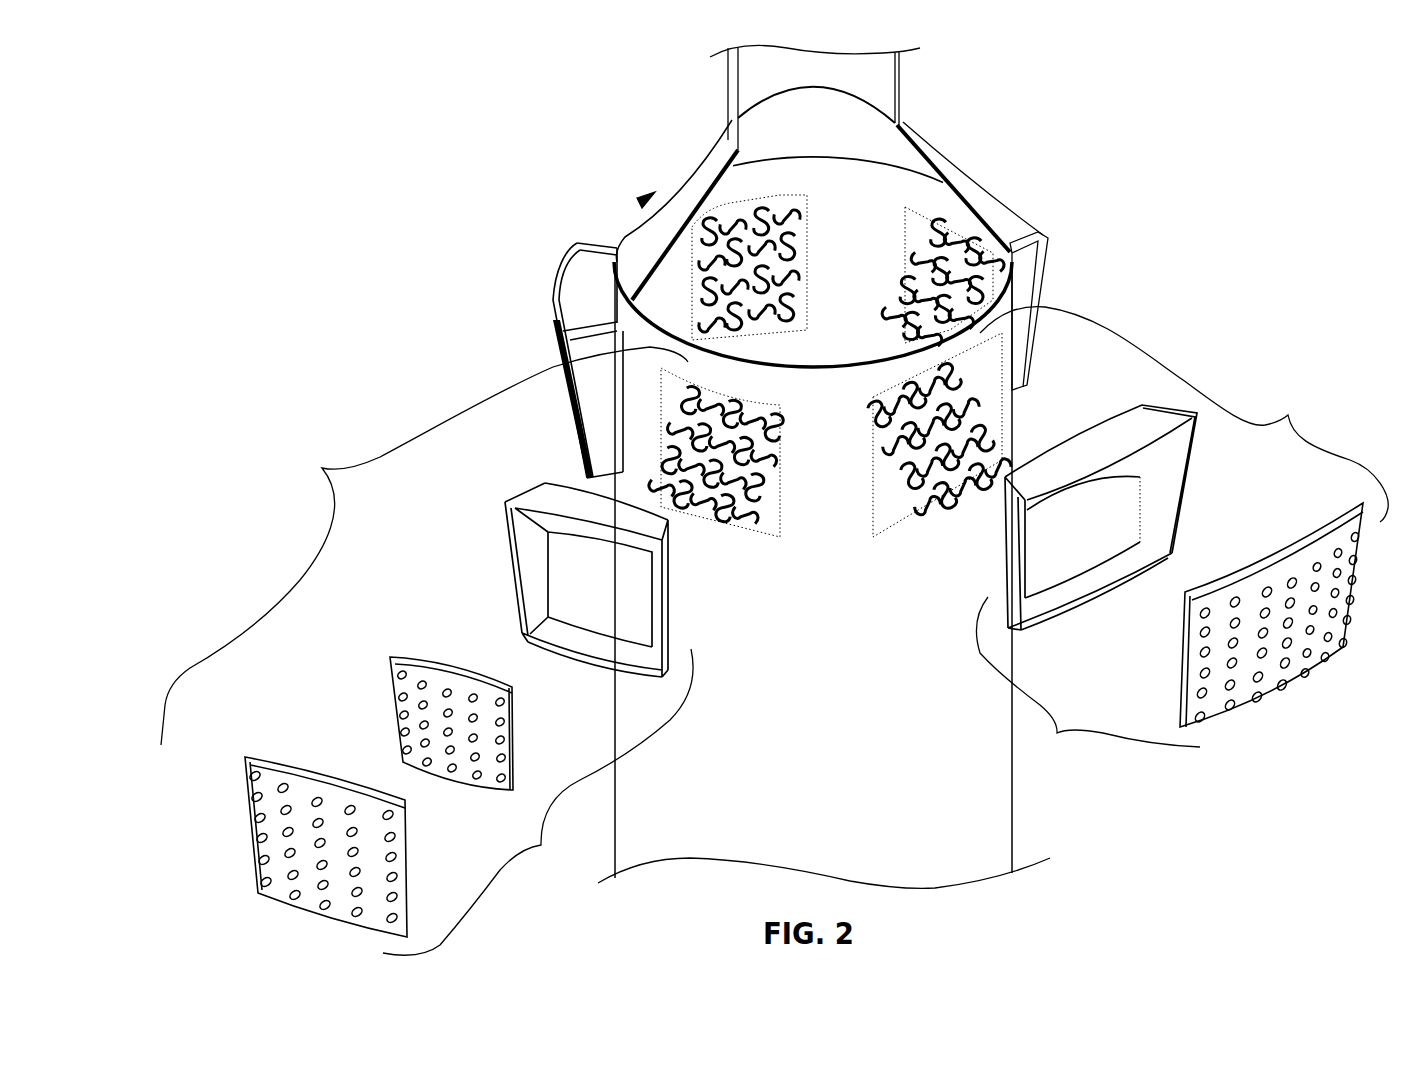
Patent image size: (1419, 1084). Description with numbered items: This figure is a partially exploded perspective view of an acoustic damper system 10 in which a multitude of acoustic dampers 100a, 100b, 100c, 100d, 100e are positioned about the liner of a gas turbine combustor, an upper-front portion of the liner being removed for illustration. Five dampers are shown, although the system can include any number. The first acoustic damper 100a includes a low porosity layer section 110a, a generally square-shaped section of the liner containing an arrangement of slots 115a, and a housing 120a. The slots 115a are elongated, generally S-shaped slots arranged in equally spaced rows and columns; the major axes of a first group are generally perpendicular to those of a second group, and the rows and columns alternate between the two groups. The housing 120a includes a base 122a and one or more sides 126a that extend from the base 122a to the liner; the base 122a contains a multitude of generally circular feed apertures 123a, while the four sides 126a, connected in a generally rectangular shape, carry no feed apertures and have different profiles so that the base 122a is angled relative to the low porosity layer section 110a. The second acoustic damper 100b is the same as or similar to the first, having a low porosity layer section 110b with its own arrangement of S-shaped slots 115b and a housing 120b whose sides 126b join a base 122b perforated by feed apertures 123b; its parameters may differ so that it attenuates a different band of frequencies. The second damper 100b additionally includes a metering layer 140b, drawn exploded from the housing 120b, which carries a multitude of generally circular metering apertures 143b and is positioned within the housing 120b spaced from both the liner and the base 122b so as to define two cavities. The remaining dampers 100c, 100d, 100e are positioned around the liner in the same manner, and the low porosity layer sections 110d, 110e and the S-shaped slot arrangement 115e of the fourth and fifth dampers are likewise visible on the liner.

The acoustic damper system 10 is at (383, 160).
The first acoustic damper 100a is at (1184, 414).
The second acoustic damper 100b is at (424, 546).
The acoustic damper 100c is at (533, 262).
The acoustic damper 100d is at (638, 176).
The acoustic damper 100e is at (1058, 210).
The low porosity layer section 110a is at (862, 523).
The low porosity layer section 110b is at (787, 517).
The mounting region 110d is at (735, 197).
The mounting region 110e is at (963, 207).
The arrangement of slots 115a is at (880, 450).
The fastening elements 115b is at (805, 242).
The fastening elements 115e is at (930, 220).
The housing 120a is at (1088, 688).
The housing 120b is at (538, 802).
The base 122a is at (1205, 724).
The base 122b is at (268, 762).
The feed apertures 123a is at (1342, 648).
The apertures 123b is at (255, 820).
The sides 126a is at (1060, 622).
The frame 126b is at (537, 505).
The metering layer 140b is at (420, 665).
The metering apertures 143b is at (390, 683).